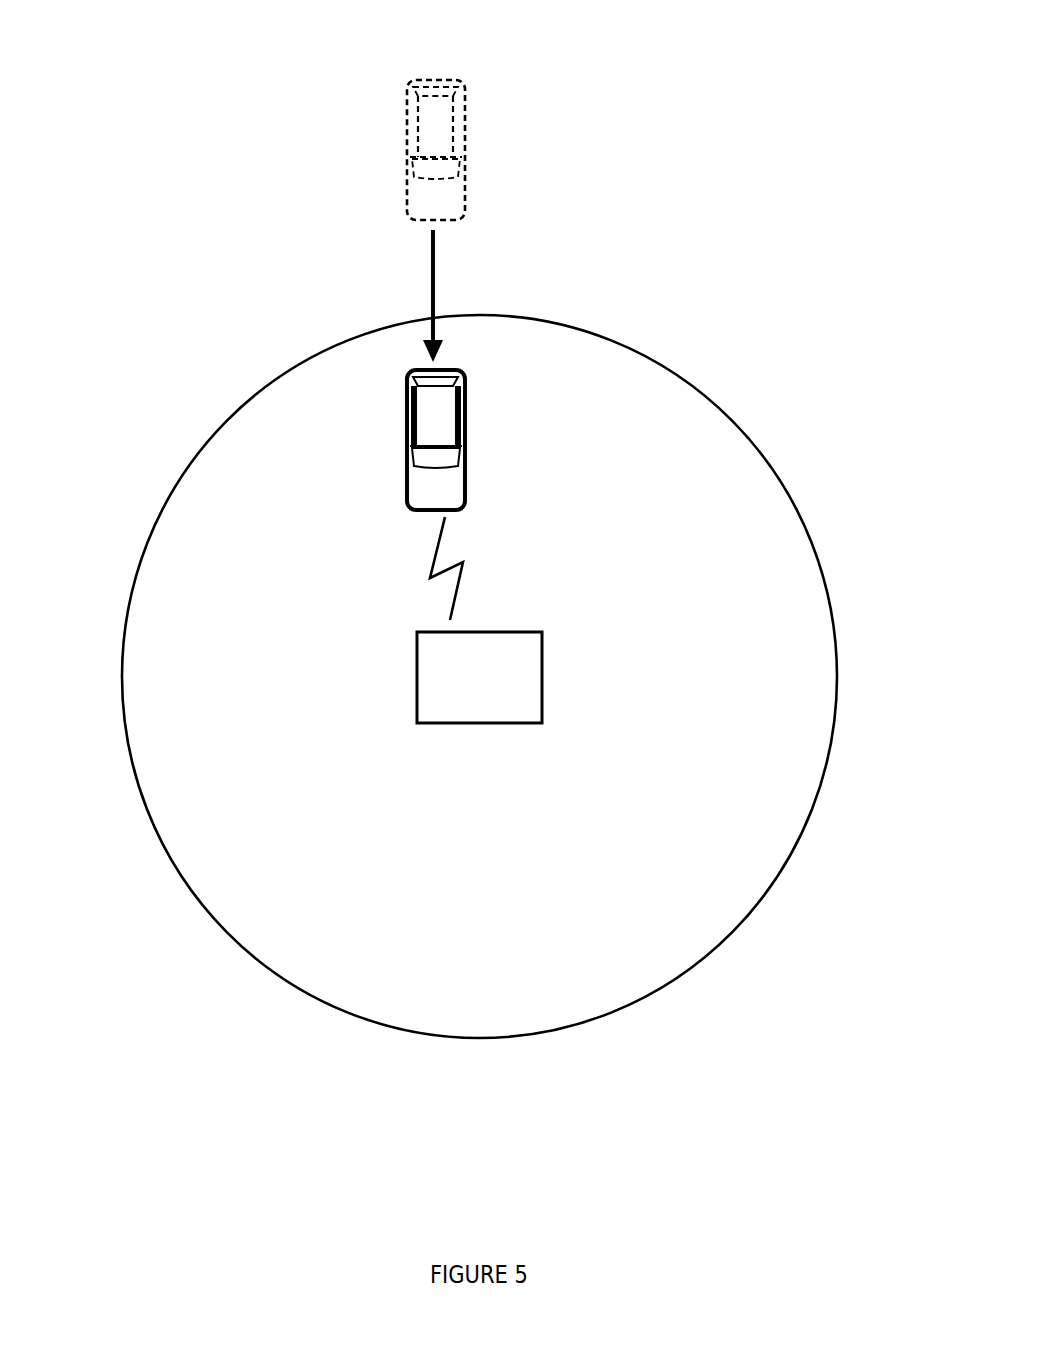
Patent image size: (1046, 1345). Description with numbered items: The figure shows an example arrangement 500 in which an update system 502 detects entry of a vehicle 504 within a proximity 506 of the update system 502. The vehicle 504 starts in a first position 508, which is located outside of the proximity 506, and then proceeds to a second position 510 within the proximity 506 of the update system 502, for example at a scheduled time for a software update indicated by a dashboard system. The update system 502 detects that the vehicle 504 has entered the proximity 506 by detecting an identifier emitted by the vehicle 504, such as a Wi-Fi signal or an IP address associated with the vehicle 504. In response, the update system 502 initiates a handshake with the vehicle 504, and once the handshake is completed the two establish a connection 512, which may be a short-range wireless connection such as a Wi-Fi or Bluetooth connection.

The arrangement 500 is at (110, 75).
The update system 502 is at (480, 712).
The vehicle 504 is at (453, 488).
The proximity 506 is at (687, 385).
The first position 508 is at (386, 135).
The second position 510 is at (383, 420).
The connection 512 is at (428, 575).